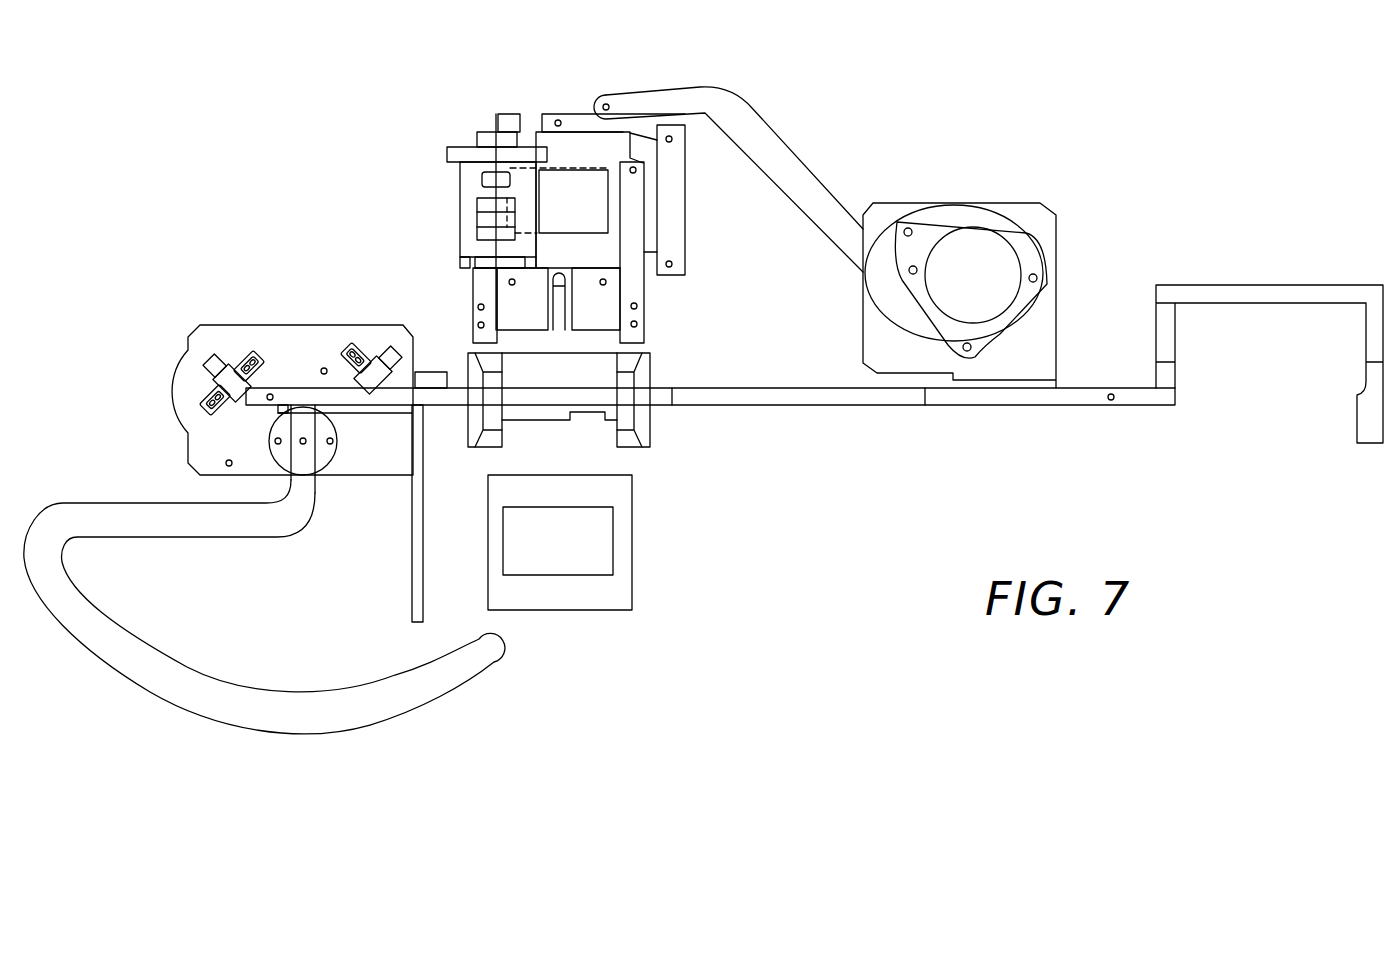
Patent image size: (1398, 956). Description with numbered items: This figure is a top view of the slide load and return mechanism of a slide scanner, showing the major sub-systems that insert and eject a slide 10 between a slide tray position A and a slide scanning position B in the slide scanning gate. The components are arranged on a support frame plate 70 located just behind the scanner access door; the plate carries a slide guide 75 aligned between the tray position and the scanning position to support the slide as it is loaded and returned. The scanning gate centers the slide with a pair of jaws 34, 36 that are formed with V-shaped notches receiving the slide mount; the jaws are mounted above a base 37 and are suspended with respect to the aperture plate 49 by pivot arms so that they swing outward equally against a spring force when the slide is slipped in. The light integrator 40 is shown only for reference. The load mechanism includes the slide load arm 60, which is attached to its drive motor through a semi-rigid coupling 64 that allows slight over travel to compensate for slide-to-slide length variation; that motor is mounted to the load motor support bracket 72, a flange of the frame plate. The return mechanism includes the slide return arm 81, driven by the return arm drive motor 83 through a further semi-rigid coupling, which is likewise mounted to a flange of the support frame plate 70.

The slide 10 is at (604, 143).
The jaw 34 is at (475, 287).
The jaw 36 is at (635, 290).
The base 37 is at (555, 113).
The light integrator 40 is at (448, 206).
The aperture plate 49 is at (505, 308).
The slide load arm 60 is at (446, 713).
The semi-rigid coupling 64 is at (325, 467).
The support frame plate 70 is at (826, 408).
The load motor support bracket 72 is at (410, 563).
The slide guide 75 is at (640, 428).
The slide return arm 81 is at (780, 140).
The return arm drive motor 83 is at (992, 260).